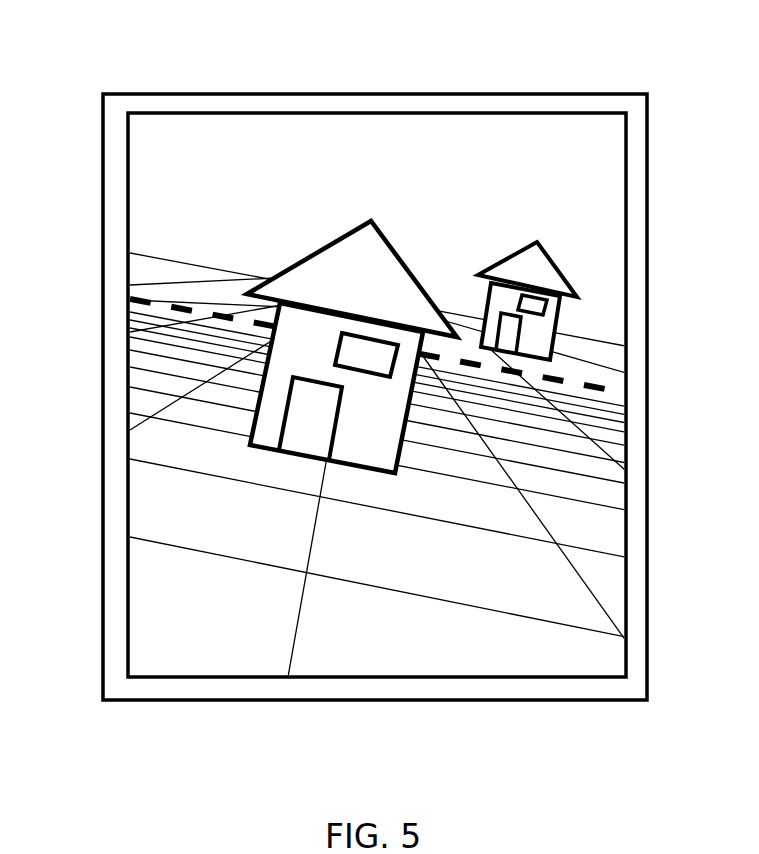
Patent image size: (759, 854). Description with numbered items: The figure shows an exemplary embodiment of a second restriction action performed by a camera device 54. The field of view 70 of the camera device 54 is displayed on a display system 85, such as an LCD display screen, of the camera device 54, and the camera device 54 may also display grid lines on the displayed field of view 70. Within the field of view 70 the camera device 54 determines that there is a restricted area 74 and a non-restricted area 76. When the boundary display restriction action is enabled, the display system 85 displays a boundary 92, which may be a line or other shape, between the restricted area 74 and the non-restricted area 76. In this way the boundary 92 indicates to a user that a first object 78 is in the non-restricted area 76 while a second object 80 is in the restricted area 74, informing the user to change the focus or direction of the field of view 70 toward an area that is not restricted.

The camera device 54 is at (628, 95).
The display system 85 is at (556, 112).
The field of view 70 is at (378, 407).
The restricted area 74 is at (188, 273).
The non-restricted area 76 is at (218, 607).
The first object 78 is at (365, 459).
The second object 80 is at (510, 258).
The boundary 92 is at (197, 313).